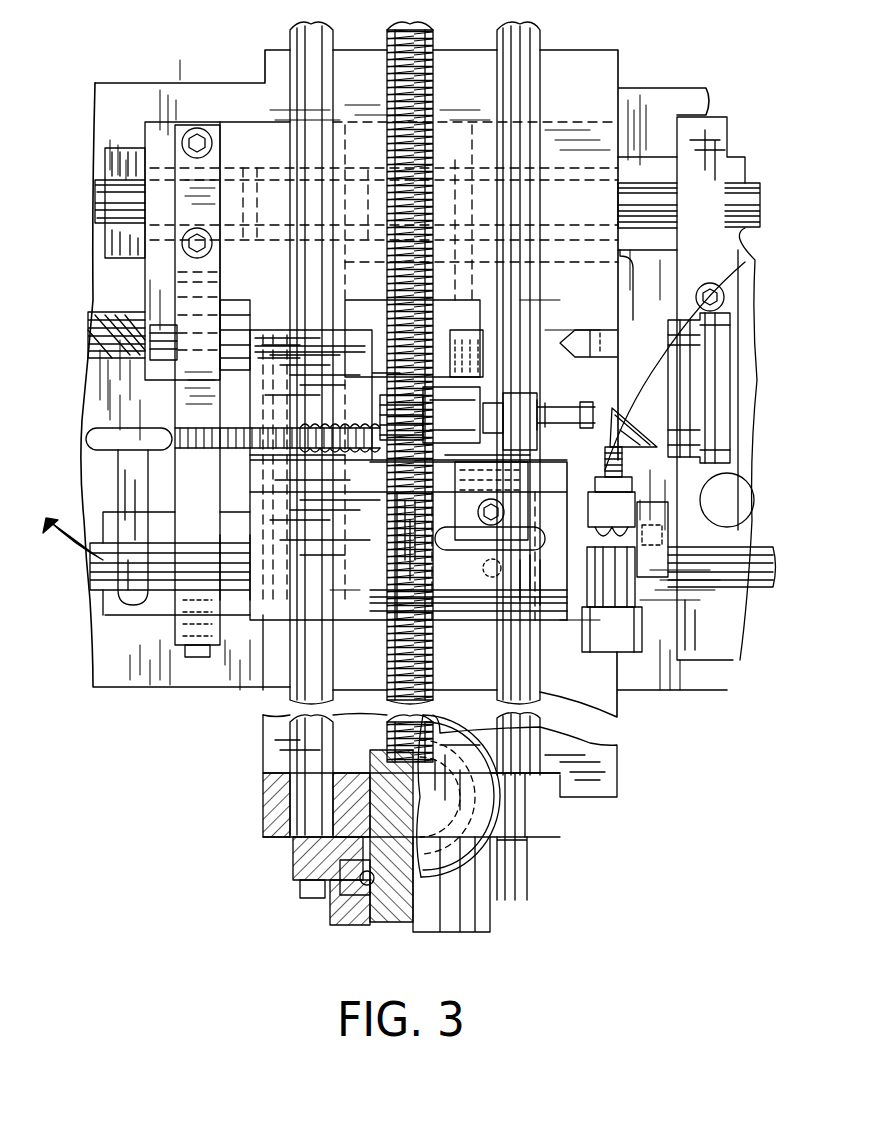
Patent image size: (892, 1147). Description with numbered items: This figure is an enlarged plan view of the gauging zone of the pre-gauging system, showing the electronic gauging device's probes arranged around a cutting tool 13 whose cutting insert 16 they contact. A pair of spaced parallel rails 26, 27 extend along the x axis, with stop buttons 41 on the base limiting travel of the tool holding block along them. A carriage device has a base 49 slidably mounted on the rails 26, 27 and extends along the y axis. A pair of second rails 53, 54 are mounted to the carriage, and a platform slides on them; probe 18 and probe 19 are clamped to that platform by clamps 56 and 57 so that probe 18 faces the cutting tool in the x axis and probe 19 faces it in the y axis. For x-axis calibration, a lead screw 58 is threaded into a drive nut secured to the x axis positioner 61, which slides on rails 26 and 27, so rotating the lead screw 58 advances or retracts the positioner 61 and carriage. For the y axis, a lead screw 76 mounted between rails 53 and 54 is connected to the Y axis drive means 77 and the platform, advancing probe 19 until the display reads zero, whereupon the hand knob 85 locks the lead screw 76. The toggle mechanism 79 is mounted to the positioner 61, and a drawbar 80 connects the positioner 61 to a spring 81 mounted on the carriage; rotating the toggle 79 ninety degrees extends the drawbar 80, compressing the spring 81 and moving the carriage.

The cutting tool 13 is at (745, 302).
The cutting insert 16 is at (645, 450).
The probe 18 is at (462, 402).
The probe 19 is at (632, 628).
The rail 26 is at (110, 582).
The rail 27 is at (122, 184).
The stop button 41 is at (715, 262).
The base 49 is at (613, 777).
The second rail 53 is at (290, 33).
The second rail 54 is at (535, 40).
The clamp 56 is at (522, 442).
The clamp 57 is at (660, 565).
The lead screw 58 is at (112, 320).
The x axis positioner 61 is at (184, 648).
The lead screw 76 is at (387, 48).
The Y axis drive means 77 is at (530, 924).
The toggle mechanism 79 is at (120, 468).
The drawbar 80 is at (250, 428).
The spring 81 is at (362, 464).
The hand knob 85 is at (525, 857).